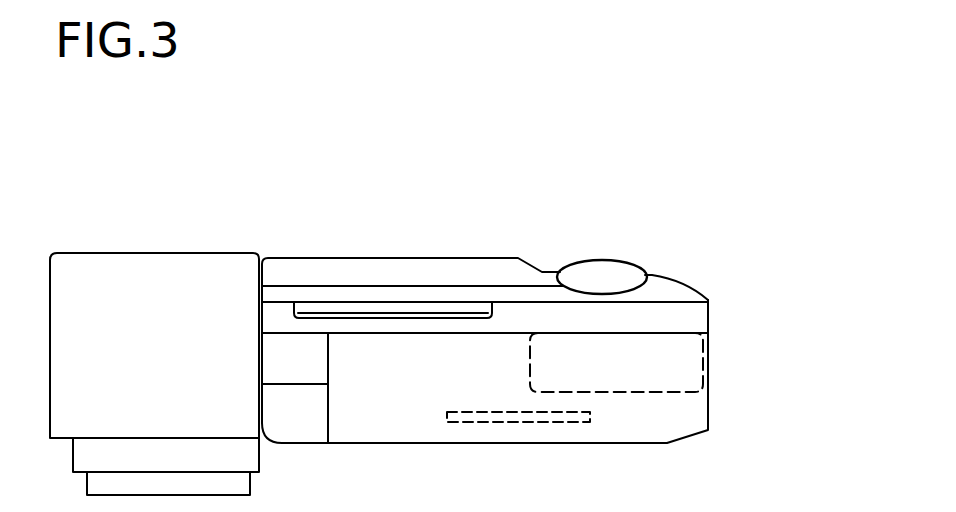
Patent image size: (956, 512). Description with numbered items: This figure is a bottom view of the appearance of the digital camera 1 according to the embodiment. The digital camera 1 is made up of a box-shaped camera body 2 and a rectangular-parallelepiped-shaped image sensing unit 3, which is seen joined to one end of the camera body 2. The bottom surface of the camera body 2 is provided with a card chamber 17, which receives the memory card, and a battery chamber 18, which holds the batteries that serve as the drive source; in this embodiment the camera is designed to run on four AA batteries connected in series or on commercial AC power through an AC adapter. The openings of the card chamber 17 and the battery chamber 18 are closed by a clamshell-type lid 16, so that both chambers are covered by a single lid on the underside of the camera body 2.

The digital camera 1 is at (423, 193).
The camera body 2 is at (262, 242).
The image sensing unit 3 is at (260, 242).
The clamshell-type lid 16 is at (653, 428).
The card chamber 17 is at (537, 418).
The battery chamber 18 is at (680, 367).